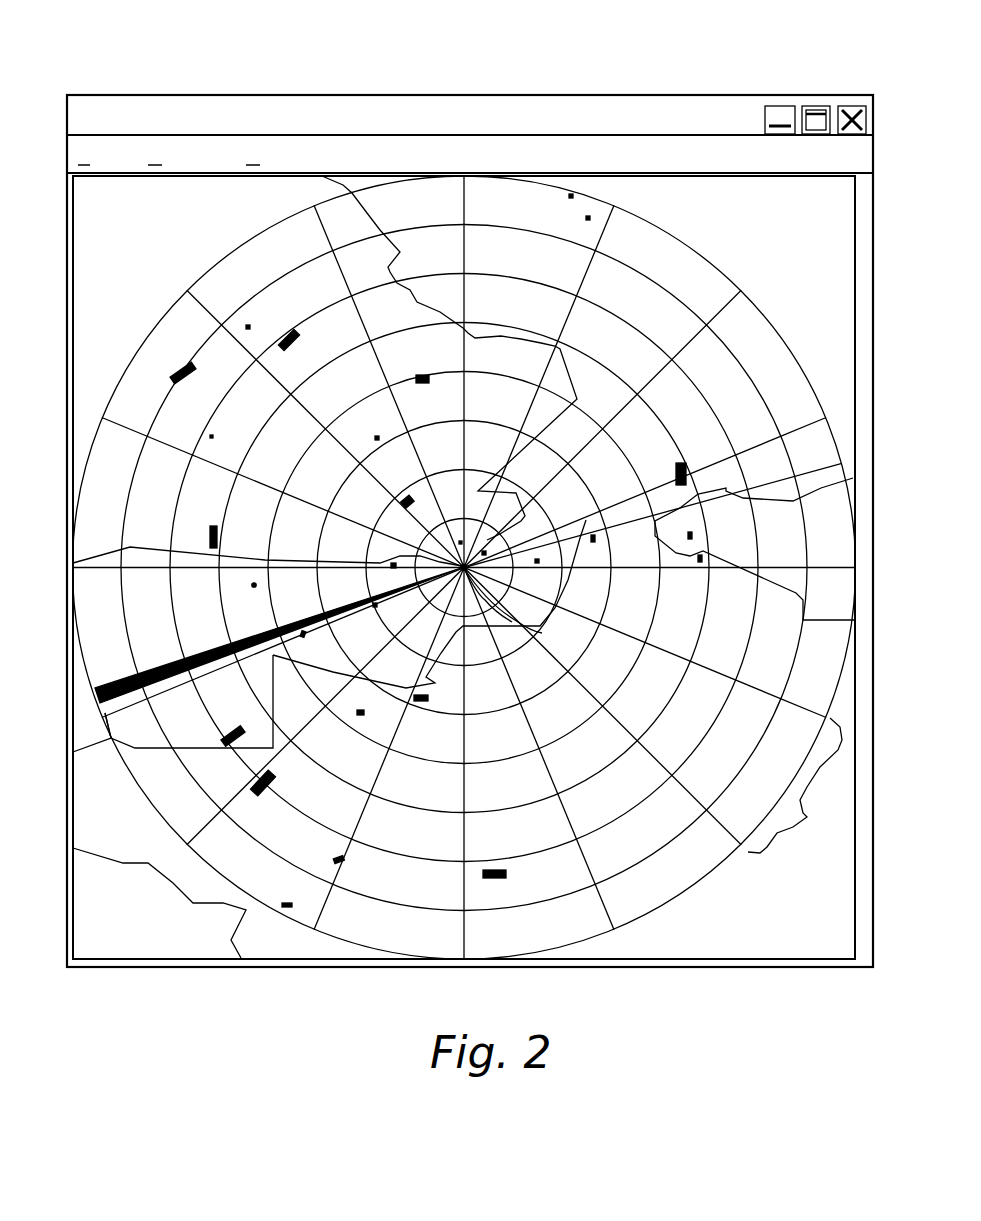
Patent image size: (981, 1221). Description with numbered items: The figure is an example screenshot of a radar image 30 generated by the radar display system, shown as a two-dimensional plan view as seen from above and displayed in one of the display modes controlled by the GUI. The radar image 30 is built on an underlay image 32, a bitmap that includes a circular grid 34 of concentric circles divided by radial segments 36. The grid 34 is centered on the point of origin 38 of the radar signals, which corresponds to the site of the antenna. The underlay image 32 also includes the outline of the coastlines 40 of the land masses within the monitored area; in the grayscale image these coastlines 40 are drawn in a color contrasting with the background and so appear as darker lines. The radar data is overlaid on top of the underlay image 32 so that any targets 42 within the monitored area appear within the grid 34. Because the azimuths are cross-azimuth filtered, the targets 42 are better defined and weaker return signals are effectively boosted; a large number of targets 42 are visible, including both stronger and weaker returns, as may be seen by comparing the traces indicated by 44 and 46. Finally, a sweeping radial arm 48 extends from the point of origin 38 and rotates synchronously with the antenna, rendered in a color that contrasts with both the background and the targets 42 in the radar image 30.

The radar image 30 is at (562, 74).
The underlay image 32 is at (718, 937).
The circular grid 34 is at (775, 324).
The radial segments 36 is at (807, 817).
The point of origin 38 is at (541, 630).
The coastlines 40 is at (372, 212).
The targets 42 is at (180, 366).
The trace 44 is at (208, 536).
The trace 46 is at (252, 585).
The sweeping radial arm 48 is at (92, 697).